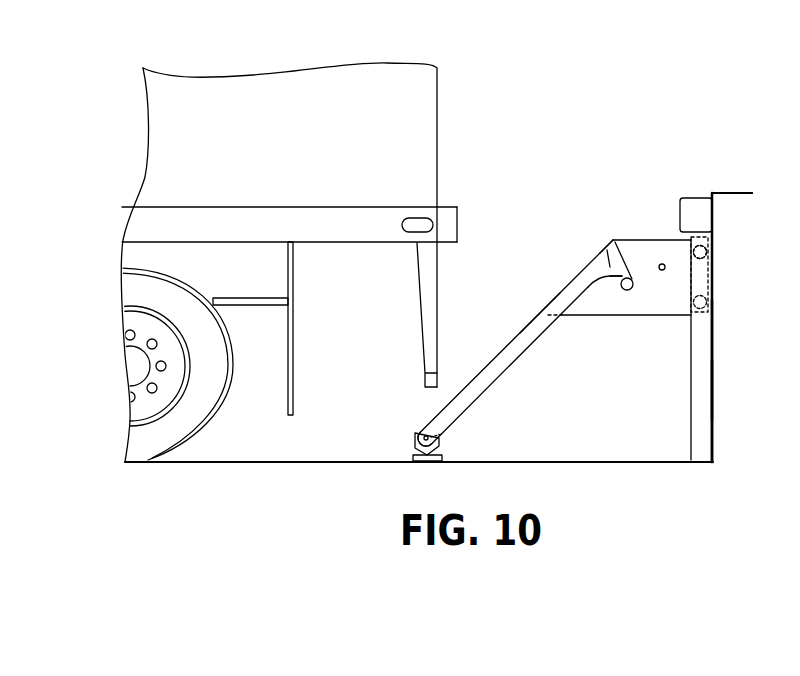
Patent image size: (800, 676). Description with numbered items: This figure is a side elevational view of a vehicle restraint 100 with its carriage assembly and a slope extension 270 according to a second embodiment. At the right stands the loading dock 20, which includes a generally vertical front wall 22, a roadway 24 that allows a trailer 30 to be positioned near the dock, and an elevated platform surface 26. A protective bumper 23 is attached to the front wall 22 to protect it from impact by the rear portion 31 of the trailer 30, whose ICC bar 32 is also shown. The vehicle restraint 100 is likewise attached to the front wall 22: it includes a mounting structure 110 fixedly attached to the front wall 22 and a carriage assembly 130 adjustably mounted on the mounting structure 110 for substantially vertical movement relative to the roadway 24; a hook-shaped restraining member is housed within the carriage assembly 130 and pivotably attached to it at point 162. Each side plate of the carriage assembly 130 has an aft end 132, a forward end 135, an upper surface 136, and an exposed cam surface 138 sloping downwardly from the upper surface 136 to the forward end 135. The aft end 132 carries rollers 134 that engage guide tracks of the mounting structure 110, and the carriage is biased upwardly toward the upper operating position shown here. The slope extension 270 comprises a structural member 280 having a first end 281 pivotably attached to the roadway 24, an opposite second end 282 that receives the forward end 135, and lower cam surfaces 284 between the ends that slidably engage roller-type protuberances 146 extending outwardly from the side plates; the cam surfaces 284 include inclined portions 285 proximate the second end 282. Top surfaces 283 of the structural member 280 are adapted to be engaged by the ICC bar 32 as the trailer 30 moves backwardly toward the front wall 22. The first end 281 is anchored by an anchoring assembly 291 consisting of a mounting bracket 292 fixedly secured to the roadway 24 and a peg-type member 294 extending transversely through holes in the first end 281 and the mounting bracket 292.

The trailer 30 is at (390, 178).
The rear portion of the trailer 31 is at (452, 223).
The ICC bar 32 is at (425, 381).
The vehicle restraint 100 is at (590, 180).
The loading dock 20 is at (746, 226).
The elevated platform surface 26 is at (726, 193).
The protective bumper 23 is at (697, 200).
The front wall 22 is at (710, 399).
The mounting structure 110 is at (708, 428).
The roadway 24 is at (565, 461).
The carriage assembly 130 is at (683, 316).
The upper surface 136 is at (663, 238).
The aft end 132 is at (710, 289).
The roller 134 is at (710, 268).
The forward end 135 is at (553, 318).
The exposed cam surface 138 is at (606, 247).
The pivot point 162 is at (659, 267).
The protuberance 146 is at (624, 291).
The slope extension 270 is at (507, 321).
The structural member 280 is at (512, 363).
The first end 281 is at (437, 446).
The second end 282 is at (613, 240).
The top surface 283 is at (538, 315).
The lower cam surface 284 is at (584, 300).
The inclined portion 285 is at (610, 281).
The anchoring assembly 291 is at (398, 432).
The mounting bracket 292 is at (413, 450).
The peg-type member 294 is at (420, 432).